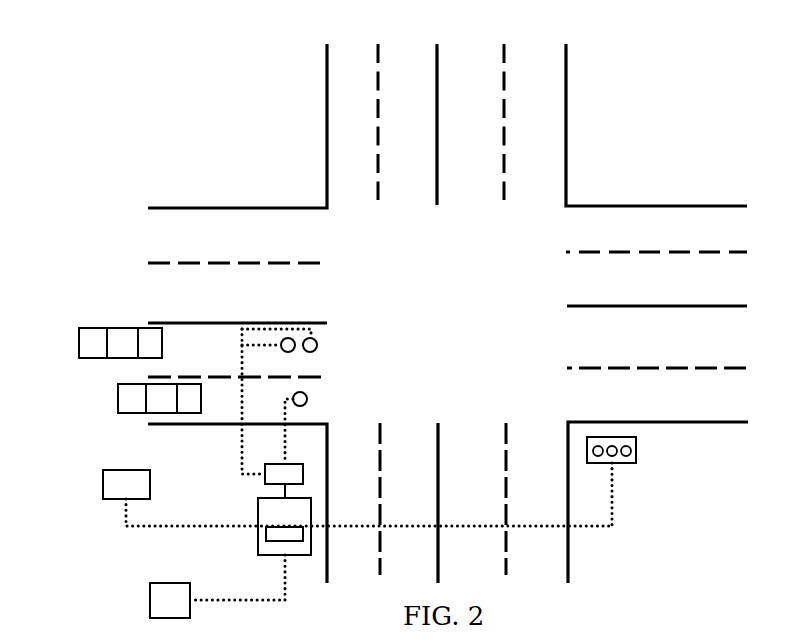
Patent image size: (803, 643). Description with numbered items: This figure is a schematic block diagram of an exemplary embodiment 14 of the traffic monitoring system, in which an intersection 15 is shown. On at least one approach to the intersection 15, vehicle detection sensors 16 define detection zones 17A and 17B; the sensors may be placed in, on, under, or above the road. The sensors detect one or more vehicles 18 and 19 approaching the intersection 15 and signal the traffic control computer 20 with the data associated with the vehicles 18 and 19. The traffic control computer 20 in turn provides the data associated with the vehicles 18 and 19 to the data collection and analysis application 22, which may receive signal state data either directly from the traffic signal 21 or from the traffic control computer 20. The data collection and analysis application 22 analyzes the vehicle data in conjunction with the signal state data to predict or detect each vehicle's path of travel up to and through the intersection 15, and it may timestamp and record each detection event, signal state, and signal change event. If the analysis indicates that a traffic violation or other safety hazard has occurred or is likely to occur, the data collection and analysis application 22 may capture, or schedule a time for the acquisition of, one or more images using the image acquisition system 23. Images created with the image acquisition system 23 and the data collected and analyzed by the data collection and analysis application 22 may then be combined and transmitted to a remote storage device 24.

The exemplary embodiment 14 is at (194, 162).
The intersection 15 is at (500, 250).
The vehicle detection sensors 16 is at (263, 476).
The detection zone 17A is at (316, 340).
The detection zone 17B is at (305, 392).
The vehicle 18 is at (87, 329).
The vehicle 19 is at (116, 390).
The traffic control computer 20 is at (298, 556).
The traffic signal 21 is at (634, 450).
The data collection and analysis application 22 is at (264, 534).
The image acquisition system 23 is at (101, 483).
The remote storage device 24 is at (148, 596).